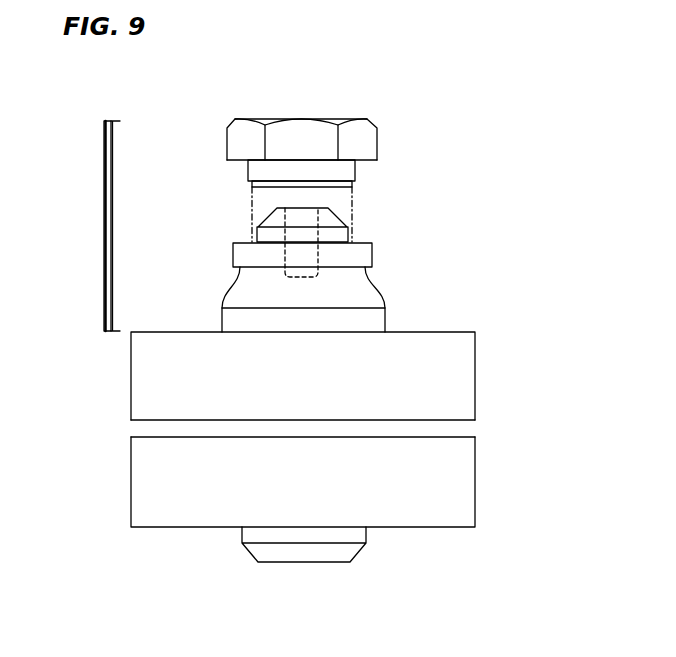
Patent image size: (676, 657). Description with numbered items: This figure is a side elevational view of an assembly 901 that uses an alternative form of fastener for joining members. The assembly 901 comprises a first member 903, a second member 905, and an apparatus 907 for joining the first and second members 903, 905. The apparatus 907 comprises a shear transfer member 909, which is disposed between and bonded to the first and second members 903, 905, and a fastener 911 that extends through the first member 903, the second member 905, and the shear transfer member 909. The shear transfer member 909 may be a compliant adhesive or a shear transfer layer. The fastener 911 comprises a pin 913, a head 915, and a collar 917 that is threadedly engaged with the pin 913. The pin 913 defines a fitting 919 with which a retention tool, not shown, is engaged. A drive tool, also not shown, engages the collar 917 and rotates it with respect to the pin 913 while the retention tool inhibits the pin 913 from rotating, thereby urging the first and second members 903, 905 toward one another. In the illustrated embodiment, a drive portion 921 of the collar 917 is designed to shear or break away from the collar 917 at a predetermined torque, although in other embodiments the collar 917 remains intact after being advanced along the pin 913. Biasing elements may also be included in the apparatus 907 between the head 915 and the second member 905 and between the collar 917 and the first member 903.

The assembly 901 is at (531, 169).
The first member 903 is at (462, 380).
The second member 905 is at (460, 505).
The apparatus for joining members 907 is at (391, 115).
The shear transfer member 909 is at (468, 428).
The fastener 911 is at (248, 570).
The pin 913 is at (343, 216).
The head 915 is at (360, 547).
The collar 917 is at (102, 208).
The fitting 919 is at (285, 253).
The drive portion 921 is at (312, 128).